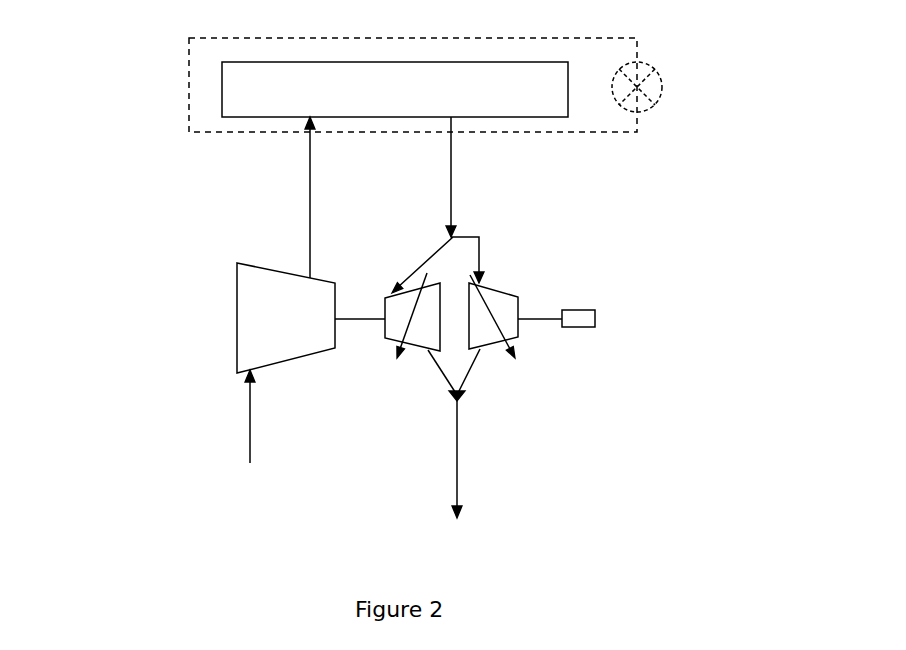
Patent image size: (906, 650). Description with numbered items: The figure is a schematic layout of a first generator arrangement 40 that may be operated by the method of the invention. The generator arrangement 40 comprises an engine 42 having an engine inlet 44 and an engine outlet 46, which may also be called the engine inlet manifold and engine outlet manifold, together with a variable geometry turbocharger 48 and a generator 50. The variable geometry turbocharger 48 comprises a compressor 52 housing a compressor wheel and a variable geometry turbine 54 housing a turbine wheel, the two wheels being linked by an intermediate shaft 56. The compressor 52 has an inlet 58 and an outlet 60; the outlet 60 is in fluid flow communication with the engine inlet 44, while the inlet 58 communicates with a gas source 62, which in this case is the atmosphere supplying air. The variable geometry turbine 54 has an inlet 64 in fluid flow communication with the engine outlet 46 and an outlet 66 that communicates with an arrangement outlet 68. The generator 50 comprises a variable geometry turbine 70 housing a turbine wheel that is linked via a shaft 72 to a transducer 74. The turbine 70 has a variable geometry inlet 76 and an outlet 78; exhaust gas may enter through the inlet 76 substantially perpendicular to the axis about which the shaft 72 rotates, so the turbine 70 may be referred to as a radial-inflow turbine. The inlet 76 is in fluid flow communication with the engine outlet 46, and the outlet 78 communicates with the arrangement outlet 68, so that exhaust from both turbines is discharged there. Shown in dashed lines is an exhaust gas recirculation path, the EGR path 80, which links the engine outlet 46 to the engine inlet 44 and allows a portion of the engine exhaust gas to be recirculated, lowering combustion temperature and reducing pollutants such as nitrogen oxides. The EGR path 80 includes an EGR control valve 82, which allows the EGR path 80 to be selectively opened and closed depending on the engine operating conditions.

The first generator arrangement 40 is at (135, 216).
The engine 42 is at (423, 62).
The engine inlet 44 is at (309, 157).
The engine outlet 46 is at (451, 188).
The variable geometry turbocharger 48 is at (334, 395).
The generator 50 is at (554, 384).
The compressor 52 is at (237, 320).
The variable geometry turbine 54 is at (419, 346).
The intermediate shaft 56 is at (367, 312).
The inlet 58 is at (252, 373).
The outlet 60 is at (309, 262).
The gas source 62 is at (265, 488).
The inlet 64 is at (427, 273).
The outlet 66 is at (438, 366).
The arrangement outlet 68 is at (458, 452).
The variable geometry turbine 70 is at (518, 297).
The shaft 72 is at (540, 317).
The transducer 74 is at (588, 327).
The variable geometry inlet 76 is at (503, 288).
The outlet 78 is at (472, 378).
The EGR path 80 is at (598, 38).
The EGR control valve 82 is at (663, 87).